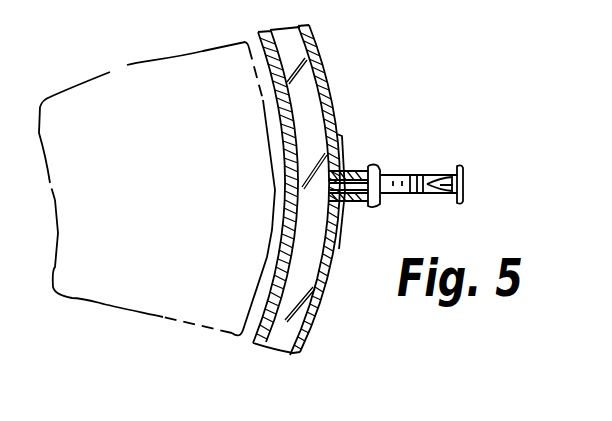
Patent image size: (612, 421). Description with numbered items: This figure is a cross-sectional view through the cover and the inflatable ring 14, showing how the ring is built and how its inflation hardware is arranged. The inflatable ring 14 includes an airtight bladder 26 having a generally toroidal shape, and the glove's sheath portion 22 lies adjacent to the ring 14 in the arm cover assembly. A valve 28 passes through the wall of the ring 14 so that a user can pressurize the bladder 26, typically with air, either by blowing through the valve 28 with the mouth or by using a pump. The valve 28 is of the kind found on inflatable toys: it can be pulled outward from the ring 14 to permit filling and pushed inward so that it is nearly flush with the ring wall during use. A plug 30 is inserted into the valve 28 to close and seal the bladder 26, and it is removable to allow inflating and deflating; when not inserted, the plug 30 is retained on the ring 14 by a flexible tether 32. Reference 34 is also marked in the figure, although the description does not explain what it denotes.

The inflatable ring 14 is at (333, 122).
The sheath portion 22 is at (253, 347).
The airtight bladder 26 is at (307, 110).
The valve 28 is at (373, 165).
The plug 30 is at (447, 186).
The flexible tether 32 is at (392, 198).
The wall element 34 is at (488, 420).